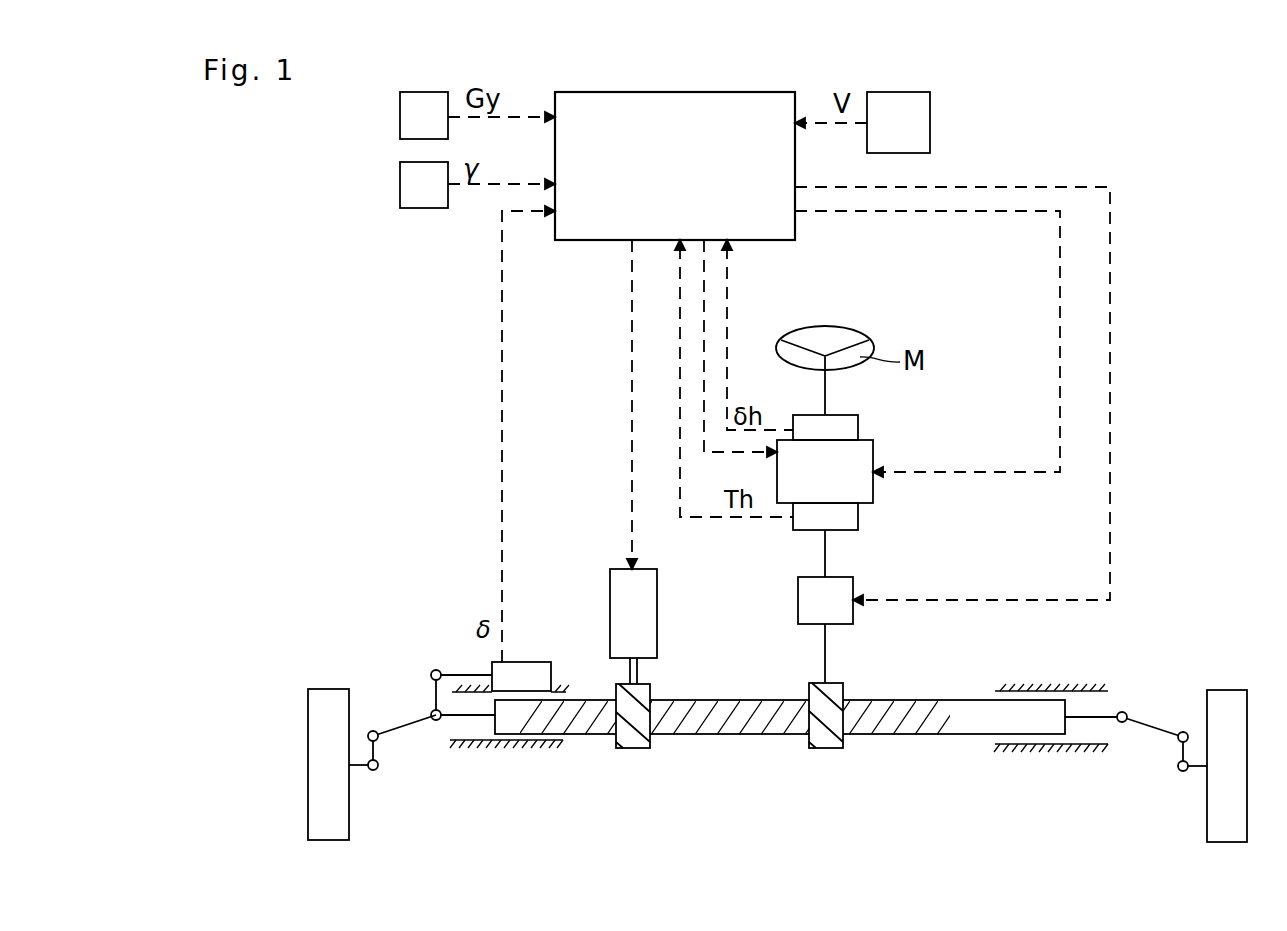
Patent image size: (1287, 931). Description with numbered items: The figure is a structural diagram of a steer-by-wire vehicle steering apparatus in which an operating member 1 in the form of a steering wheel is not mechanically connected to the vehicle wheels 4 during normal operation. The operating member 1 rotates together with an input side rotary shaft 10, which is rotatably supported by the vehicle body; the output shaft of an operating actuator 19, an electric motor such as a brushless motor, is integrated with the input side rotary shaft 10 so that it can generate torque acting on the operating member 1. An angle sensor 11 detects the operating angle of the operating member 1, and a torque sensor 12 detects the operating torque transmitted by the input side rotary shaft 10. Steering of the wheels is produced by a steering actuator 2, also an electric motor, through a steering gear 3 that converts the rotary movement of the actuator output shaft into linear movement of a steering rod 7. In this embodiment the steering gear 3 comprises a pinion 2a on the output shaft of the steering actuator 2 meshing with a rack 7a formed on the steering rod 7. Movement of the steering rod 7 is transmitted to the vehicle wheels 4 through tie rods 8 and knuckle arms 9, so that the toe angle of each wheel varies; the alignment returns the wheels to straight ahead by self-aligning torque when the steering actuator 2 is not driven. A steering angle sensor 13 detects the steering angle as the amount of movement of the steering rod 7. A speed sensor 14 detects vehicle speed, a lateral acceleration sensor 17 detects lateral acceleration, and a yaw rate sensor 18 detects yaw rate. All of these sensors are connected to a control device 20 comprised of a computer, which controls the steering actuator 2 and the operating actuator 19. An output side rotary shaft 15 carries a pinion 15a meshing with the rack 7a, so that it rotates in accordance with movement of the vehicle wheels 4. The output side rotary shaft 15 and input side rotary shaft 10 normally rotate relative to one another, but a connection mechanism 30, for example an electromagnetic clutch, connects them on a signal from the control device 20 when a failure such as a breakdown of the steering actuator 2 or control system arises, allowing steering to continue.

The operating member 1 is at (860, 337).
The steering actuator 2 is at (625, 605).
The pinion 2a is at (633, 748).
The steering gear 3 is at (700, 700).
The vehicle wheels 4 is at (320, 812).
The steering rod 7 is at (985, 735).
The rack 7a is at (727, 735).
The tie rods 8 is at (400, 724).
The knuckle arms 9 is at (358, 768).
The input side rotary shaft 10 is at (831, 555).
The angle sensor 11 is at (850, 424).
The torque sensor 12 is at (850, 516).
The steering angle sensor 13 is at (530, 670).
The speed sensor 14 is at (913, 120).
The output side rotary shaft 15 is at (825, 652).
The pinion 15a is at (823, 748).
The lateral acceleration sensor 17 is at (408, 115).
The yaw rate sensor 18 is at (408, 183).
The operating actuator 19 is at (790, 472).
The control device 20 is at (703, 108).
The connection mechanism 30 is at (808, 595).